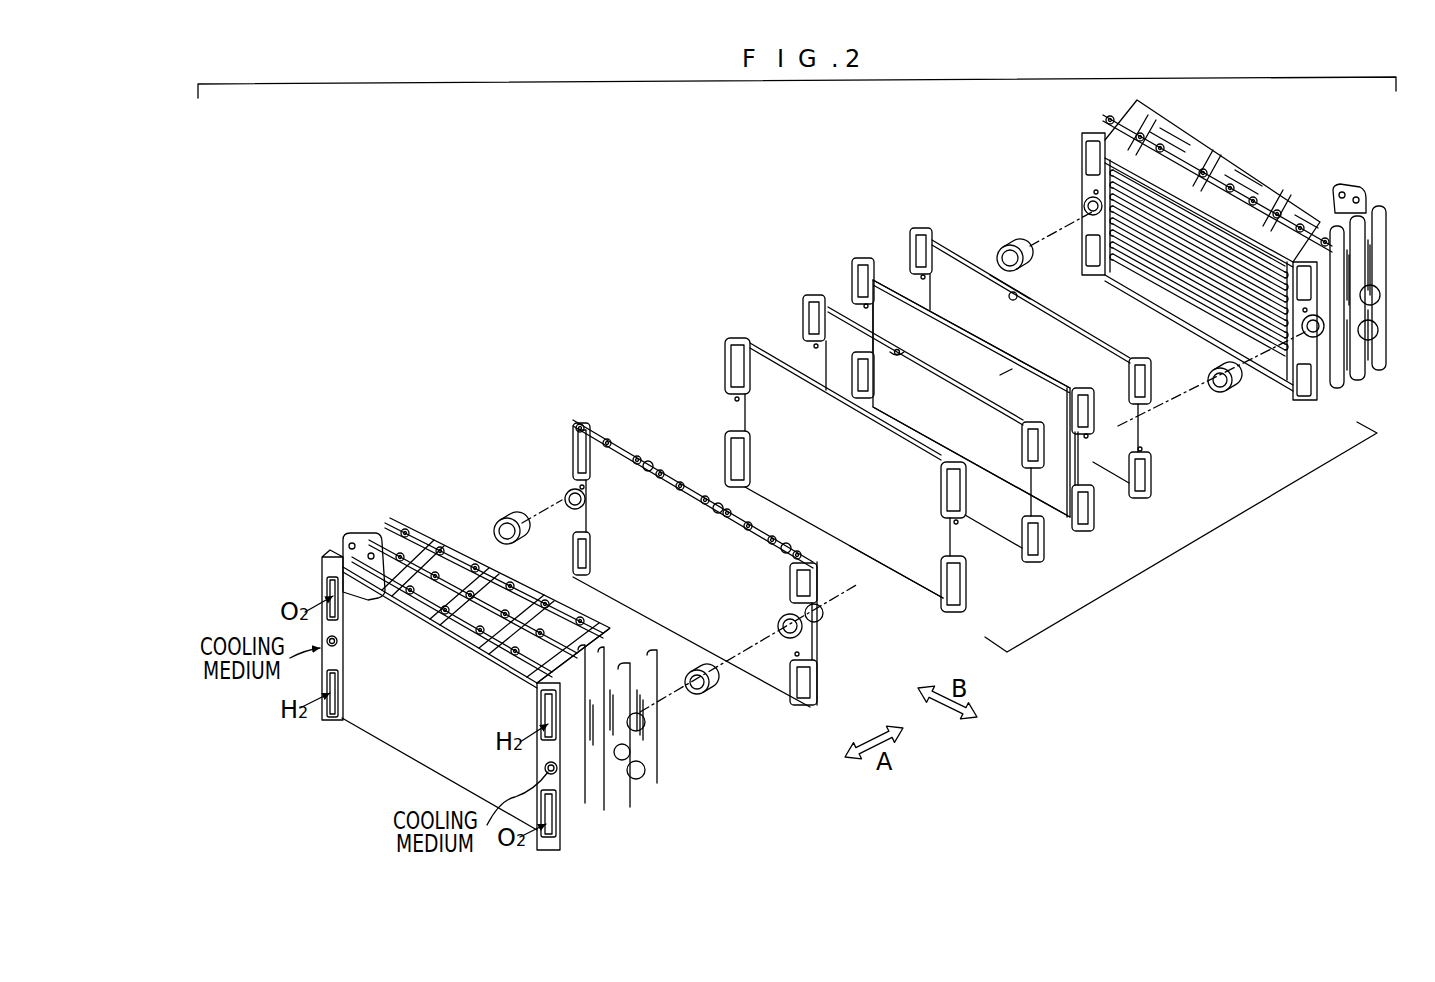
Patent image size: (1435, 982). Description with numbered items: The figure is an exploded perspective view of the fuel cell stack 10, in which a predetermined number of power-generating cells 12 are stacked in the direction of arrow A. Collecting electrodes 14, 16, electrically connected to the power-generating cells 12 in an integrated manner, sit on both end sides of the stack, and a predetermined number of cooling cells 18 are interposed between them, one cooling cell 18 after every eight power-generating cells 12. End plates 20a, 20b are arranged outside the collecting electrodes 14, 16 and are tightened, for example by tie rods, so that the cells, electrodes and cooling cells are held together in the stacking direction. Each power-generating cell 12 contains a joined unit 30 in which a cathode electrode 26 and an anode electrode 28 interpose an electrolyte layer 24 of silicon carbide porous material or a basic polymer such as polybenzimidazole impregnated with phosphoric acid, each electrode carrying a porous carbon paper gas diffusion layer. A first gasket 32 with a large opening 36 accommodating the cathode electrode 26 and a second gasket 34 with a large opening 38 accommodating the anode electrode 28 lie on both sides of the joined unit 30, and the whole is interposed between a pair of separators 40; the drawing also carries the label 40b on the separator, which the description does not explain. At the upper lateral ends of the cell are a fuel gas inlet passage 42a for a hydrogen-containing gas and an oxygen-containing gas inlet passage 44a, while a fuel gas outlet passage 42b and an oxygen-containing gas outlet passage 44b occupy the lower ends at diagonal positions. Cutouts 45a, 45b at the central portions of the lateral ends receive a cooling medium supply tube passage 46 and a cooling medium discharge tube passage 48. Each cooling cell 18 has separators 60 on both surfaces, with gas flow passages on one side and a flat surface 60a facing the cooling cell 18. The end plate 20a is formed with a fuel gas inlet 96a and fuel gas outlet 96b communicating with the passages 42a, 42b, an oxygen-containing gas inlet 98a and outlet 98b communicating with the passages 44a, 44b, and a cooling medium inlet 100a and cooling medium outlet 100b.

The fuel cell stack 10 is at (835, 163).
The power-generating cell 12 is at (1230, 571).
The collecting electrode 14 is at (357, 535).
The collecting electrode 16 is at (1352, 198).
The cooling cell 18 is at (592, 418).
The end plate 20a is at (418, 742).
The end plate 20b is at (1291, 175).
The electrolyte layer 24 is at (1083, 470).
The cathode electrode 26 is at (1050, 498).
The anode electrode 28 is at (1010, 368).
The joined unit 30 is at (888, 275).
The first gasket 32 is at (833, 305).
The second gasket 34 is at (945, 243).
The large opening 36 is at (940, 348).
The large opening 38 is at (1068, 293).
The separator 40 is at (1281, 388).
The coolant flow channel 40b is at (1183, 193).
The fuel gas inlet passage 42a is at (1090, 413).
The fuel gas outlet passage 42b is at (861, 385).
The oxygen-containing gas inlet passage 44a is at (863, 283).
The oxygen-containing gas outlet passage 44b is at (1078, 512).
The cutout 45a is at (1082, 474).
The cutout 45b is at (866, 348).
The cooling medium supply tube passage 46 is at (712, 695).
The cooling medium discharge tube passage 48 is at (515, 520).
The separator 60 is at (760, 338).
The surface 60a is at (905, 566).
The fuel gas inlet 96a is at (543, 708).
The fuel gas outlet 96b is at (407, 713).
The oxygen-containing gas inlet 98a is at (322, 590).
The oxygen-containing gas outlet 98b is at (629, 851).
The cooling medium inlet 100a is at (556, 772).
The cooling medium outlet 100b is at (412, 668).